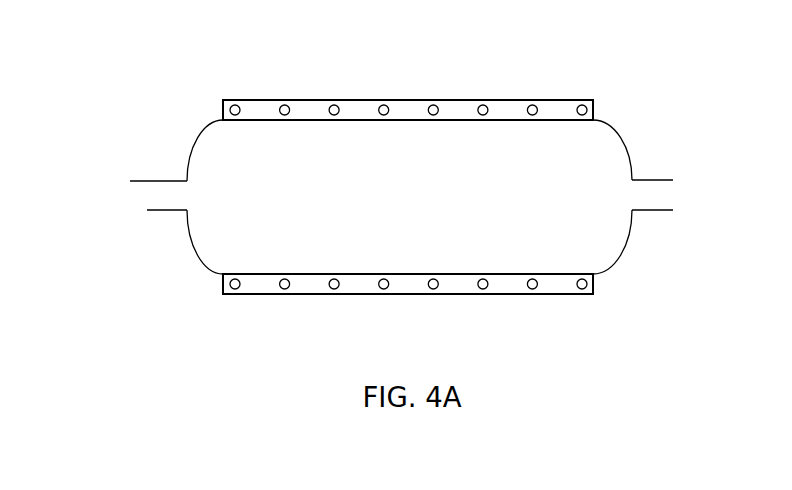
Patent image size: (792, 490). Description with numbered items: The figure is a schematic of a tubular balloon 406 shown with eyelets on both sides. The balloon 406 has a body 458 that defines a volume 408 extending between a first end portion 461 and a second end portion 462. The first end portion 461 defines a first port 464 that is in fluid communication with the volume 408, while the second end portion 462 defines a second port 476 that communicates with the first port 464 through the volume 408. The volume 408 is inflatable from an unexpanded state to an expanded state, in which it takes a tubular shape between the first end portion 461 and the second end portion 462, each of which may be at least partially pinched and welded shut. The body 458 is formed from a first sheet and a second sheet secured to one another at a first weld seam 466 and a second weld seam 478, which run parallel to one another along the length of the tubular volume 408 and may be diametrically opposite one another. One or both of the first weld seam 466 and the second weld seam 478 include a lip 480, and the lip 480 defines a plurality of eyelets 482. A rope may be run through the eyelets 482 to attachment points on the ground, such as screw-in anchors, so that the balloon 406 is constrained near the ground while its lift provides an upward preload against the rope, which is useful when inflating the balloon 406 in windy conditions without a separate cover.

The balloon 406 is at (158, 103).
The volume 408 is at (382, 214).
The body 458 is at (614, 264).
The first end portion 461 is at (202, 263).
The second end portion 462 is at (623, 142).
The first port 464 is at (163, 212).
The first weld seam 466 is at (505, 98).
The second port 476 is at (660, 211).
The second weld seam 478 is at (567, 295).
The lip 480 is at (260, 108).
The eyelets 482 is at (388, 105).